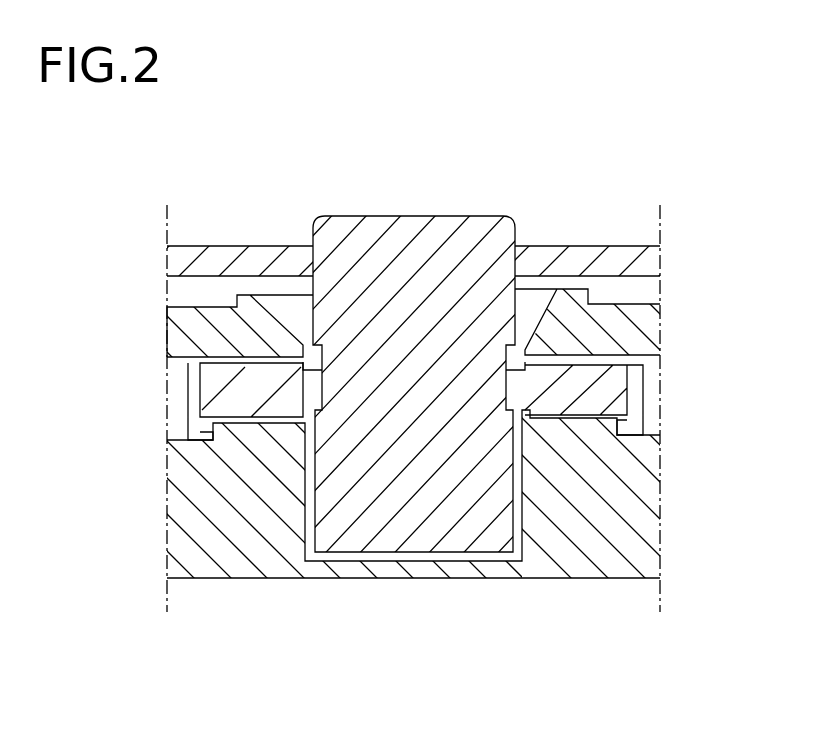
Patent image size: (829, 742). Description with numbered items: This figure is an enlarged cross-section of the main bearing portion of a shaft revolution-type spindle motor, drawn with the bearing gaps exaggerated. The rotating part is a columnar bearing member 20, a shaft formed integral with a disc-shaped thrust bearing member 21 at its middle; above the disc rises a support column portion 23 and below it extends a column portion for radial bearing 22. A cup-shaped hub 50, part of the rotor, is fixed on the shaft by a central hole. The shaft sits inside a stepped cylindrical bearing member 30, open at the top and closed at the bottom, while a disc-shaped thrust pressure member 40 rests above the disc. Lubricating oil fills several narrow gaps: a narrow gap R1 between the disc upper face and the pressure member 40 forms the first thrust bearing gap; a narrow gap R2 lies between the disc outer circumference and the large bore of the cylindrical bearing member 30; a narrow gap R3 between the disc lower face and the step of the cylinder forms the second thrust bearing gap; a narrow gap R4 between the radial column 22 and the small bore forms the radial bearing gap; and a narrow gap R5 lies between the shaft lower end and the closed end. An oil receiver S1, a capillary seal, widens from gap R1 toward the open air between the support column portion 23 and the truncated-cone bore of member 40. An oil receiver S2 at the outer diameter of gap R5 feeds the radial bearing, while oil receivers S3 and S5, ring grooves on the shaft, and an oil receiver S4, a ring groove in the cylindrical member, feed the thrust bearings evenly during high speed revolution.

The columnar bearing member 20 is at (414, 376).
The support column portion 23 is at (345, 302).
The column portion for radial bearing 22 is at (337, 480).
The cup-shaped hub 50 is at (217, 264).
The disc-shaped thrust pressure member 40 is at (182, 326).
The disc-shaped thrust bearing member 21 is at (205, 376).
The cylindrical bearing member 30 is at (617, 563).
The oil receiver S1 is at (302, 312).
The oil receiver for radial bearing S2 is at (300, 563).
The oil receiver for thrust bearing S3 is at (507, 342).
The oil receiver for thrust bearing S4 is at (190, 438).
The oil receiver for thrust bearing S5 is at (522, 416).
The narrow gap R1 is at (593, 355).
The narrow gap R2 is at (645, 390).
The narrow gap R3 is at (535, 418).
The narrow gap R4 is at (520, 487).
The narrow gap R5 is at (425, 562).